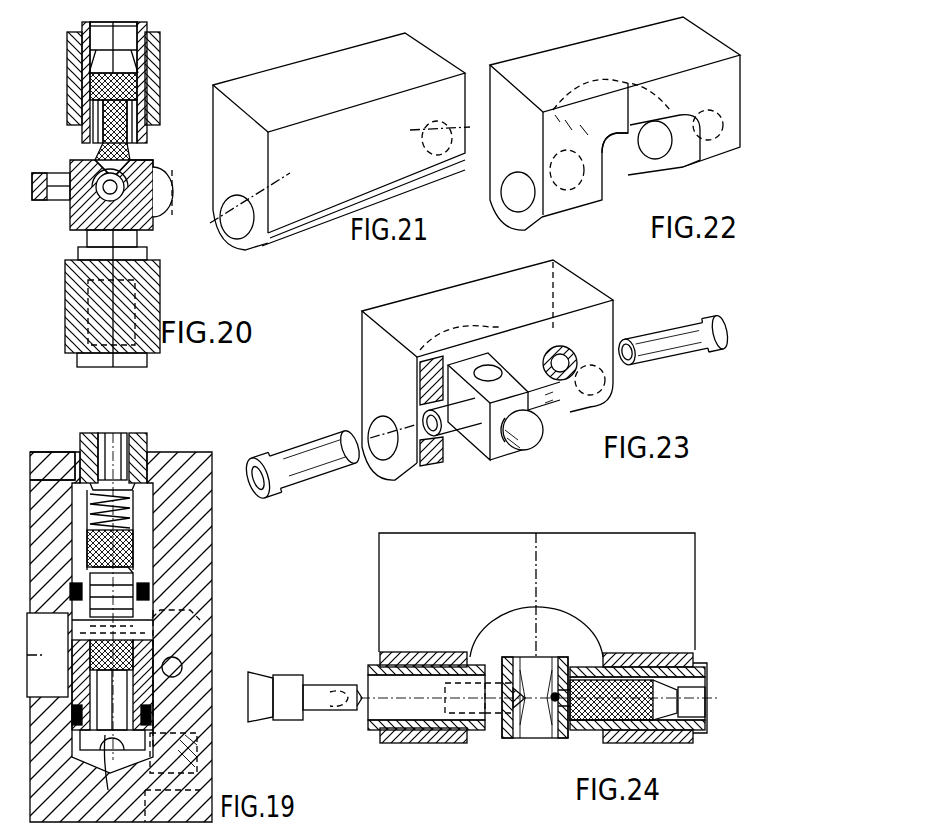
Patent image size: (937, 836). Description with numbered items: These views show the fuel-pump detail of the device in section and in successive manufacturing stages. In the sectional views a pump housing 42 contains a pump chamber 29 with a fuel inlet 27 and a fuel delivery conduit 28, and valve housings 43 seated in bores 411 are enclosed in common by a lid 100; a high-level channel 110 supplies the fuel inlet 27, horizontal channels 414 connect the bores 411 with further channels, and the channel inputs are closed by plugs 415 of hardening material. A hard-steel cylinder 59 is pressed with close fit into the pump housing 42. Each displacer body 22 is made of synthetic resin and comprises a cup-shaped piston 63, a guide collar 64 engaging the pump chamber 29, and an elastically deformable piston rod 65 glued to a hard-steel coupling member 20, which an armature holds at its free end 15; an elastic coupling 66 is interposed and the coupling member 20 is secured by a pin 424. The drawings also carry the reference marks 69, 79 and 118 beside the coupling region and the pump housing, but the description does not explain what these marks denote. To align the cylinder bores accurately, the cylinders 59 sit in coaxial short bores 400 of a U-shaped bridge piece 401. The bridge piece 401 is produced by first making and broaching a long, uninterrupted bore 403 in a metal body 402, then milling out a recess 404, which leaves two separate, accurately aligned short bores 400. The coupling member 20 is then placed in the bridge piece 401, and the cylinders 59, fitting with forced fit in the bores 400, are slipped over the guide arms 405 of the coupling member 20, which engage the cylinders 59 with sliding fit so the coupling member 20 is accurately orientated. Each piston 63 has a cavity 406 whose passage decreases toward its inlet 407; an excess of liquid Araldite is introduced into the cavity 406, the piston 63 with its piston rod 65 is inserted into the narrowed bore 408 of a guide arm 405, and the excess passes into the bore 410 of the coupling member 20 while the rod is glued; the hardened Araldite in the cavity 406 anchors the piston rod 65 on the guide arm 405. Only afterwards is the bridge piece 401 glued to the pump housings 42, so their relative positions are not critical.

In FIG. 20, the free end 15 is at (38, 177).
In FIG. 20, the coupling member 20 is at (80, 222).
In FIG. 23, the coupling member 20 is at (463, 430).
In FIG. 24, the coupling member 20 is at (542, 657).
In FIG. 20, the displacer body 22 is at (133, 62).
In FIG. 19, the fuel inlet 27 is at (197, 776).
In FIG. 19, the fuel delivery conduit 28 is at (137, 437).
In FIG. 20, the pump chamber 29 is at (120, 37).
In FIG. 19, the pump chamber 29 is at (44, 655).
In FIG. 19, the pump housing 42 is at (195, 588).
In FIG. 19, the valve housing 43 is at (143, 548).
In FIG. 20, the hard-steel cylinder 59 is at (84, 28).
In FIG. 23, the hard-steel cylinder 59 is at (310, 447).
In FIG. 24, the hard-steel cylinder 59 is at (427, 727).
In FIG. 20, the cup-shaped piston 63 is at (82, 72).
In FIG. 24, the cup-shaped piston 63 is at (262, 690).
In FIG. 20, the guide collar 64 is at (131, 87).
In FIG. 24, the guide collar 64 is at (290, 685).
In FIG. 20, the piston rod 65 is at (133, 117).
In FIG. 24, the piston rod 65 is at (320, 692).
In FIG. 20, the elastic coupling 66 is at (90, 173).
In FIG. 20, the collar 69 is at (140, 250).
In FIG. 20, the disc 79 is at (163, 217).
In FIG. 23, the disc 79 is at (530, 438).
In FIG. 19, the lid 100 is at (52, 465).
In FIG. 19, the high-level channel 110 is at (105, 735).
In FIG. 20, the connection 118 is at (36, 212).
In FIG. 22, the short bore 400 is at (507, 203).
In FIG. 20, the U-shaped bridge piece 401 is at (72, 46).
In FIG. 22, the U-shaped bridge piece 401 is at (555, 67).
In FIG. 23, the U-shaped bridge piece 401 is at (487, 370).
In FIG. 24, the U-shaped bridge piece 401 is at (540, 615).
In FIG. 21, the metal body 402 is at (280, 90).
In FIG. 21, the long uninterrupted bore 403 is at (250, 233).
In FIG. 20, the recess 404 is at (140, 160).
In FIG. 22, the recess 404 is at (620, 150).
In FIG. 24, the recess 404 is at (550, 707).
In FIG. 23, the guide arm 405 is at (450, 437).
In FIG. 24, the guide arm 405 is at (493, 677).
In FIG. 24, the cavity 406 is at (345, 710).
In FIG. 24, the inlet 407 is at (352, 690).
In FIG. 20, the narrowed bore 408 is at (138, 133).
In FIG. 24, the narrowed bore 408 is at (440, 705).
In FIG. 24, the bore 410 is at (550, 667).
In FIG. 19, the bore 411 is at (153, 570).
In FIG. 19, the horizontal channel 414 is at (180, 667).
In FIG. 19, the plug 415 is at (197, 753).
In FIG. 20, the pin 424 is at (128, 190).